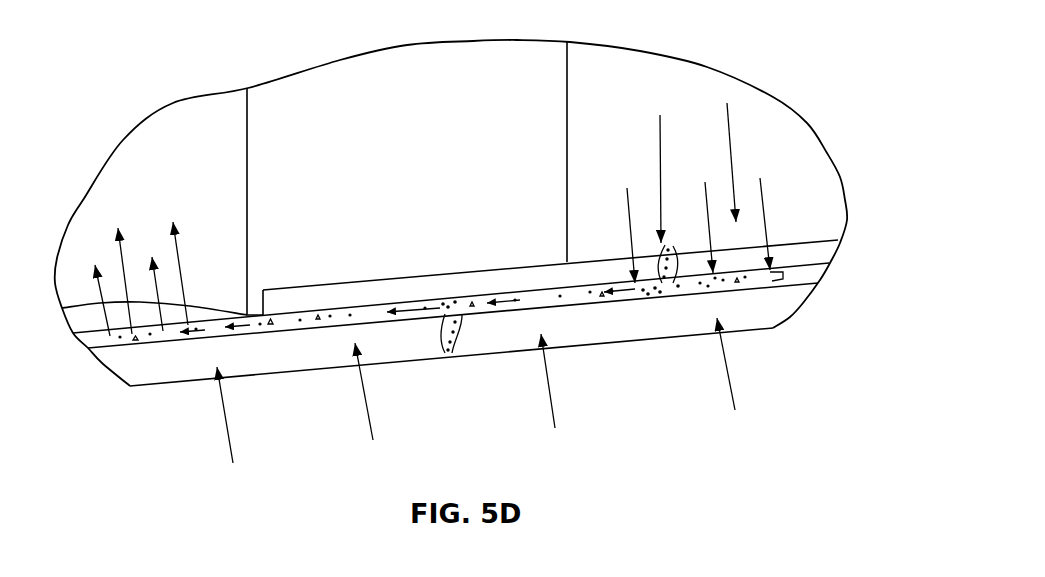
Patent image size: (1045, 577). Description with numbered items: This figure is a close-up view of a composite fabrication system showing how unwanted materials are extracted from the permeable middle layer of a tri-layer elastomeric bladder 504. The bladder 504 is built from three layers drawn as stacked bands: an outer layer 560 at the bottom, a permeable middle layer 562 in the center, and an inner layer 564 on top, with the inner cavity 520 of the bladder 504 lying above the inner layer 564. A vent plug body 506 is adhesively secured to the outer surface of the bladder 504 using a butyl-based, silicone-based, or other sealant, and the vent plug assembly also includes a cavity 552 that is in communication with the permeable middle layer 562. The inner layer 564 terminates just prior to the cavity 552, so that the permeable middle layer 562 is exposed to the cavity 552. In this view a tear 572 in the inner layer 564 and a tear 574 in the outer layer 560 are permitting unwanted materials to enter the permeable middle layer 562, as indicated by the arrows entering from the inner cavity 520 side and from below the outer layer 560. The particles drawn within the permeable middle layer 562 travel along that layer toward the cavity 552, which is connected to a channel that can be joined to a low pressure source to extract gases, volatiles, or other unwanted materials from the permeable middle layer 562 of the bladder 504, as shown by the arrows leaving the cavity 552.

The tri-layer elastomeric bladder 504 is at (799, 323).
The vent plug body 506 is at (452, 147).
The inner cavity 520 is at (637, 106).
The cavity 552 is at (213, 184).
The outer layer 560 is at (793, 298).
The permeable middle layer 562 is at (810, 270).
The inner layer 564 is at (823, 253).
The tear in the inner layer 572 is at (668, 294).
The tear in the outer layer 574 is at (450, 353).